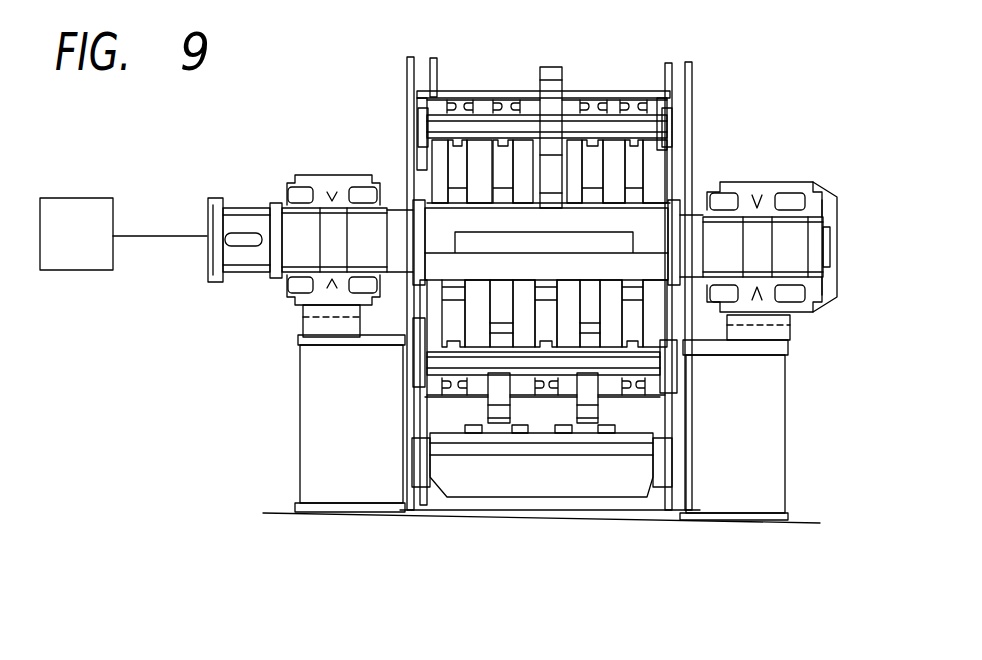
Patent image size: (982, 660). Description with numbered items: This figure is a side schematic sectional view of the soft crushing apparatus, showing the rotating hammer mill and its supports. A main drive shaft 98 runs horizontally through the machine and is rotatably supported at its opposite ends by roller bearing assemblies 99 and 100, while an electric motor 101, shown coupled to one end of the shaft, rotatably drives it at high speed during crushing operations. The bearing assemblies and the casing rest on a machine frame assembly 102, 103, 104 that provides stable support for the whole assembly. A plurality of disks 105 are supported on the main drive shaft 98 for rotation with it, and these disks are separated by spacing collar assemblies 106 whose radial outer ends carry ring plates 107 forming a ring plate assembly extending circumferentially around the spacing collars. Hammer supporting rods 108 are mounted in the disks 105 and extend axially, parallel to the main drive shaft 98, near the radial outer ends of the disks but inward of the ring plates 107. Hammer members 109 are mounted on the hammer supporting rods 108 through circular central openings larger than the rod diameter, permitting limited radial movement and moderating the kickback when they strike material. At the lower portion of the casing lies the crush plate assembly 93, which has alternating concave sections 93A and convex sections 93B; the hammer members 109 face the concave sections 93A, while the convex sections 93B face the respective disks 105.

The crush plate assembly 93 is at (538, 440).
The concave sections 93A is at (498, 430).
The convex sections 93B is at (475, 430).
The main drive shaft 98 is at (613, 245).
The roller bearing assembly 99 is at (779, 170).
The roller bearing assembly 100 is at (325, 160).
The electric motor 101 is at (62, 272).
The machine frame assembly 102 is at (313, 407).
The machine frame assembly 103 is at (613, 488).
The machine frame assembly 104 is at (772, 412).
The disks 105 is at (484, 103).
The spacing collar assemblies 106 is at (452, 162).
The ring plates 107 is at (462, 93).
The hammer supporting rods 108 is at (670, 97).
The hammer members 109 is at (555, 67).